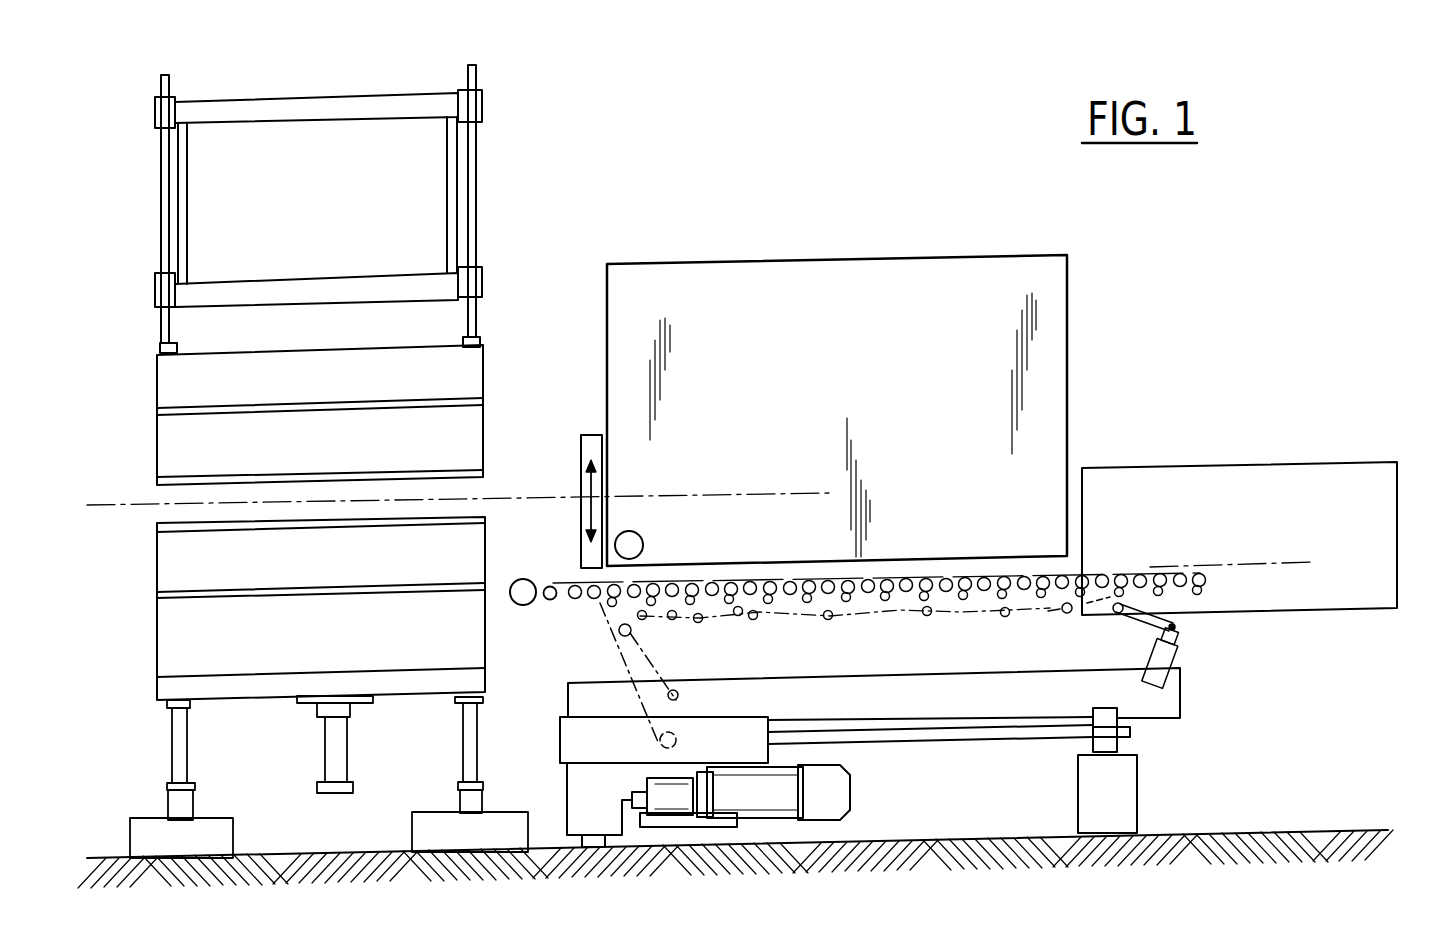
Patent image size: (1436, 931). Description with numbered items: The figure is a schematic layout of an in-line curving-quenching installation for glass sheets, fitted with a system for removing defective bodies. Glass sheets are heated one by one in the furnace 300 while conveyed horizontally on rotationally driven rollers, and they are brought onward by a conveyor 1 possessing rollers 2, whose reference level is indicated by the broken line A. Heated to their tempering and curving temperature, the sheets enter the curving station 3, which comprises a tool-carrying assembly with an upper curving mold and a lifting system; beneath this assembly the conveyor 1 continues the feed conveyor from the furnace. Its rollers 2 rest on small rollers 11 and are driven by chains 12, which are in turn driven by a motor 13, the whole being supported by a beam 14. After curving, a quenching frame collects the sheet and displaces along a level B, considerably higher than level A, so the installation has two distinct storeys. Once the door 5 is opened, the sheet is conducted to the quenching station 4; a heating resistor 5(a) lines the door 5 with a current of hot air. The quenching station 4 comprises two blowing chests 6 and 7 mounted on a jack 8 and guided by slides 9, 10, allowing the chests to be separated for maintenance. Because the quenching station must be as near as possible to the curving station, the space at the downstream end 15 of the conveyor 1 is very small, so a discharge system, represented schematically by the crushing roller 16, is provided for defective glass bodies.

The conveyor 1 is at (1078, 572).
The rollers 2 is at (1200, 588).
The curving station 3 is at (1045, 418).
The quenching station 4 is at (138, 358).
The door 5 is at (581, 458).
The blowing chest 6 is at (157, 457).
The blowing chest 7 is at (157, 558).
The jack 8 is at (331, 745).
The slide 9 is at (178, 745).
The slide 10 is at (466, 725).
The small rollers 11 is at (882, 600).
The chains 12 is at (658, 656).
The motor 13 is at (780, 805).
The beam 14 is at (955, 682).
The downstream end 15 is at (550, 600).
The crushing roller 16 is at (522, 605).
The furnace 300 is at (1230, 475).
The reference level A is at (1162, 566).
The level B is at (105, 496).